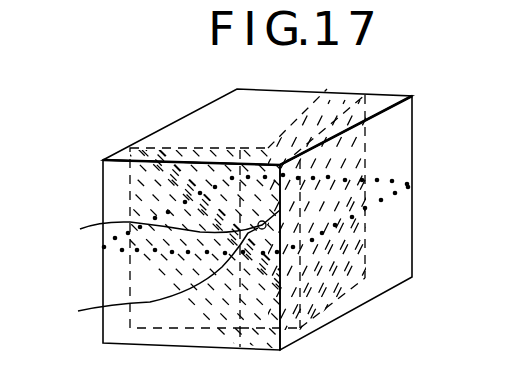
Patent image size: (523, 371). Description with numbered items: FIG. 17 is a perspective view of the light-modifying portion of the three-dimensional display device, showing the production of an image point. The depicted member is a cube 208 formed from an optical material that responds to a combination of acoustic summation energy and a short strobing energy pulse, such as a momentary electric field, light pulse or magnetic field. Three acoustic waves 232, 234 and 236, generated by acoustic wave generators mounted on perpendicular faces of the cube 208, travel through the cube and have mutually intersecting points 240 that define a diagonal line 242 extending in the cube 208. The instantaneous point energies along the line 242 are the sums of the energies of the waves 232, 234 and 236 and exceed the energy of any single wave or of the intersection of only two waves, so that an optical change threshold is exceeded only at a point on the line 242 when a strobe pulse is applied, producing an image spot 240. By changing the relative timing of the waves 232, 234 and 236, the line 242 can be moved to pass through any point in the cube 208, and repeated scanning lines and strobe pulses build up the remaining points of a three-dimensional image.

The cube 208 is at (211, 110).
The acoustic wave 232 is at (327, 92).
The acoustic wave 234 is at (368, 184).
The acoustic wave 236 is at (158, 145).
The image spot 240 is at (158, 227).
The line 242 is at (147, 277).